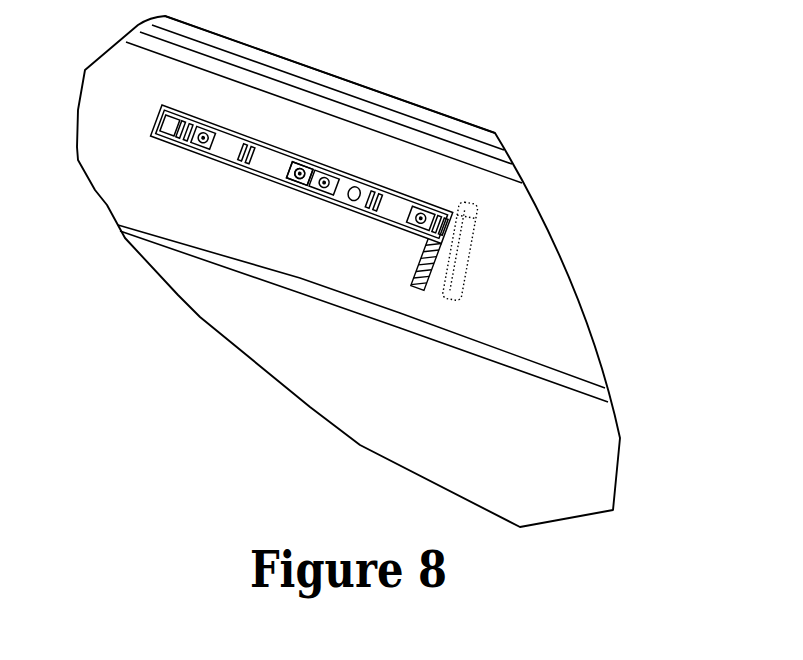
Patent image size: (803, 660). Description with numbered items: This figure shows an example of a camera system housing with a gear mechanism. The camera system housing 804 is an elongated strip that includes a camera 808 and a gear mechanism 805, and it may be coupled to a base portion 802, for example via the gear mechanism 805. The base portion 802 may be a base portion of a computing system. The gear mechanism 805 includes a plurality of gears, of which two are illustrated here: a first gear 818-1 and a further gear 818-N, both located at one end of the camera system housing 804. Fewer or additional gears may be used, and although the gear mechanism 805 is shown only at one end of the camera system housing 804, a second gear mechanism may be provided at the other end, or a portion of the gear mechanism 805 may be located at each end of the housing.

The base portion 802 is at (247, 240).
The camera system housing 804 is at (225, 145).
The camera 808 is at (298, 192).
The gear mechanism 805 is at (467, 247).
The gear 818-N is at (470, 220).
The gear 818-1 is at (443, 281).